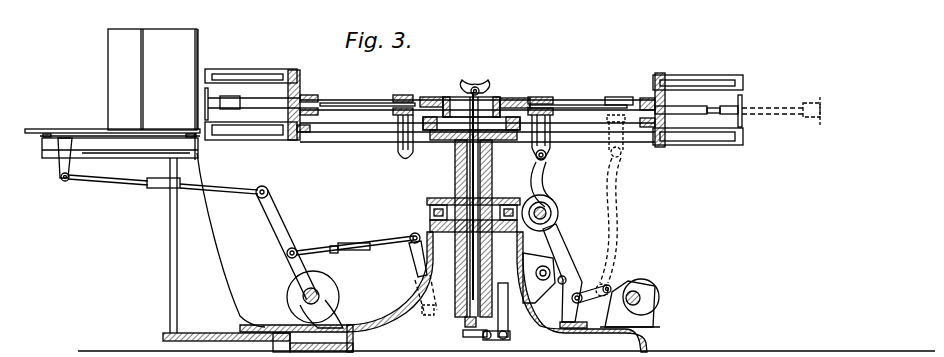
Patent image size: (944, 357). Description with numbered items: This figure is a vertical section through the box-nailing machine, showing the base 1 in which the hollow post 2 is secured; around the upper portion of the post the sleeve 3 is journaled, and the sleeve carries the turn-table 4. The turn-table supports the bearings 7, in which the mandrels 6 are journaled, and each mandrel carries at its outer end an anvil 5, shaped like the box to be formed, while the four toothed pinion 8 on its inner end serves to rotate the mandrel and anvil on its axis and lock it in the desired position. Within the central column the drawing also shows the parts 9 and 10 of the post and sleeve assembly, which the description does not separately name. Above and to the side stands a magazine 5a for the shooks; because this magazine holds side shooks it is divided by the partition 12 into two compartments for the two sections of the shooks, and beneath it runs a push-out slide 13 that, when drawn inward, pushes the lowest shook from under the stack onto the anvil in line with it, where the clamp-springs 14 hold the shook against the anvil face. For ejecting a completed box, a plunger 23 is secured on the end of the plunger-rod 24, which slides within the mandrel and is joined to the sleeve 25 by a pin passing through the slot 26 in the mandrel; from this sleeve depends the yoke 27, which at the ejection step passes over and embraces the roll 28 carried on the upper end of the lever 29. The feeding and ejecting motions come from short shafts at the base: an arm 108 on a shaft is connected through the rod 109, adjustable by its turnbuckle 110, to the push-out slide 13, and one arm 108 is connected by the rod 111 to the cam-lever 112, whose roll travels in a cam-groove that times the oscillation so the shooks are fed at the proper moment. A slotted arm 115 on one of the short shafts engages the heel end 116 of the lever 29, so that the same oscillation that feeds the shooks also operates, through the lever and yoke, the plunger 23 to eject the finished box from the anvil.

The base 1 is at (648, 346).
The hollow post 2 is at (455, 297).
The sleeve 3 is at (492, 150).
The turn-table 4 is at (637, 143).
The anvil 5 is at (474, 95).
The magazine 5a is at (199, 40).
The mandrel 6 is at (315, 99).
The bearing 7 is at (303, 95).
The four toothed pinion 8 is at (497, 97).
The hub 9 is at (448, 131).
The central rod 10 is at (480, 180).
The partition 12 is at (144, 40).
The push-out slide 13 is at (31, 143).
The clamp-spring 14 is at (279, 70).
The plunger 23 is at (210, 100).
The plunger-rod 24 is at (716, 116).
The sleeve 25 is at (404, 95).
The slot 26 is at (366, 103).
The yoke 27 is at (397, 153).
The roll 28 is at (552, 164).
The lever 29 is at (560, 213).
The arm 108 is at (282, 212).
The rod 109 is at (121, 188).
The turnbuckle 110 is at (158, 191).
The rod 111 is at (318, 248).
The cam-lever 112 is at (413, 255).
The slotted arm 115 is at (630, 285).
The heel end 116 is at (581, 290).